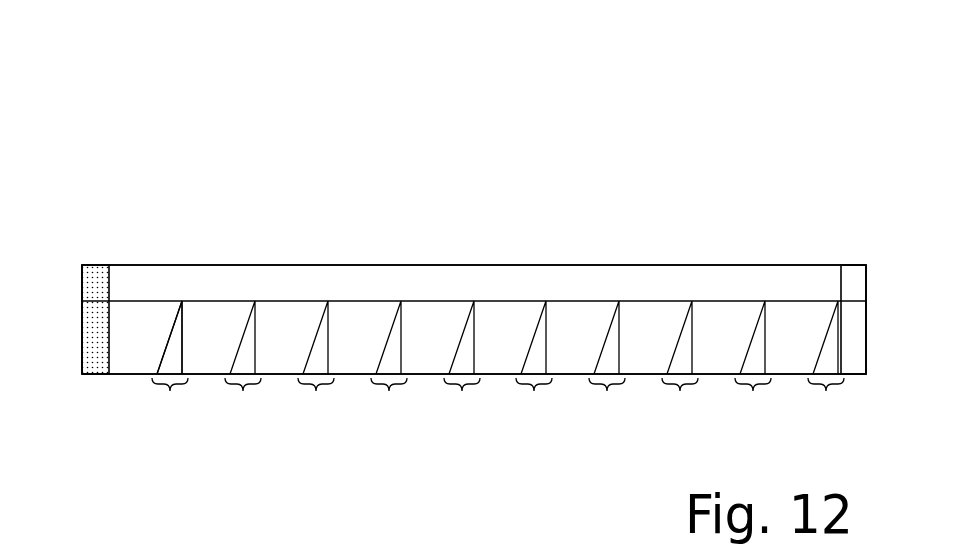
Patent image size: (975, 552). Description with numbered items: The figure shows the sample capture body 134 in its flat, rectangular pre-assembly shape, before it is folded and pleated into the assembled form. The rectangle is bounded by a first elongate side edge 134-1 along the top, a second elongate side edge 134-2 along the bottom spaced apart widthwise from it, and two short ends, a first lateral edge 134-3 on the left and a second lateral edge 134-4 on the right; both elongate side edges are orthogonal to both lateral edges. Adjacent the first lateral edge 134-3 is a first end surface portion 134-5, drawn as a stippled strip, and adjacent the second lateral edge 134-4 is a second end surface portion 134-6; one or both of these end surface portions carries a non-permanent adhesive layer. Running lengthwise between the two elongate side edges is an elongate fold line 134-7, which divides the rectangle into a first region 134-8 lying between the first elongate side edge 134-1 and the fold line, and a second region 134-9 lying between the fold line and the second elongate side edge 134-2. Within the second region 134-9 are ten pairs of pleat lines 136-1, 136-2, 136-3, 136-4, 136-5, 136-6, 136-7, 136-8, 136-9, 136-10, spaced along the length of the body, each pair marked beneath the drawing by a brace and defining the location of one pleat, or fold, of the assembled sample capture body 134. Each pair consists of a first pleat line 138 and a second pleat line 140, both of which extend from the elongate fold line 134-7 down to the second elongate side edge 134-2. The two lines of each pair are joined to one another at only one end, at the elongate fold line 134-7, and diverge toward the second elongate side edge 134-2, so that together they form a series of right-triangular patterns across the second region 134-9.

The sample capture body 134 is at (855, 130).
The first elongate side edge 134-1 is at (487, 265).
The second elongate side edge 134-2 is at (498, 375).
The first lateral edge 134-3 is at (82, 308).
The second lateral edge 134-4 is at (867, 326).
The first end surface portion 134-5 is at (93, 250).
The second end surface portion 134-6 is at (853, 250).
The elongate fold line 134-7 is at (572, 302).
The first region 134-8 is at (680, 287).
The second region 134-9 is at (427, 333).
The pair of pleat lines 136-1 is at (170, 391).
The pair of pleat lines 136-2 is at (243, 391).
The pair of pleat lines 136-3 is at (316, 391).
The pair of pleat lines 136-4 is at (389, 391).
The pair of pleat lines 136-5 is at (462, 391).
The pair of pleat lines 136-6 is at (534, 391).
The pair of pleat lines 136-7 is at (607, 391).
The pair of pleat lines 136-8 is at (680, 391).
The pair of pleat lines 136-9 is at (753, 391).
The pair of pleat lines 136-10 is at (826, 391).
The first pleat line 138 is at (183, 333).
The second pleat line 140 is at (170, 342).